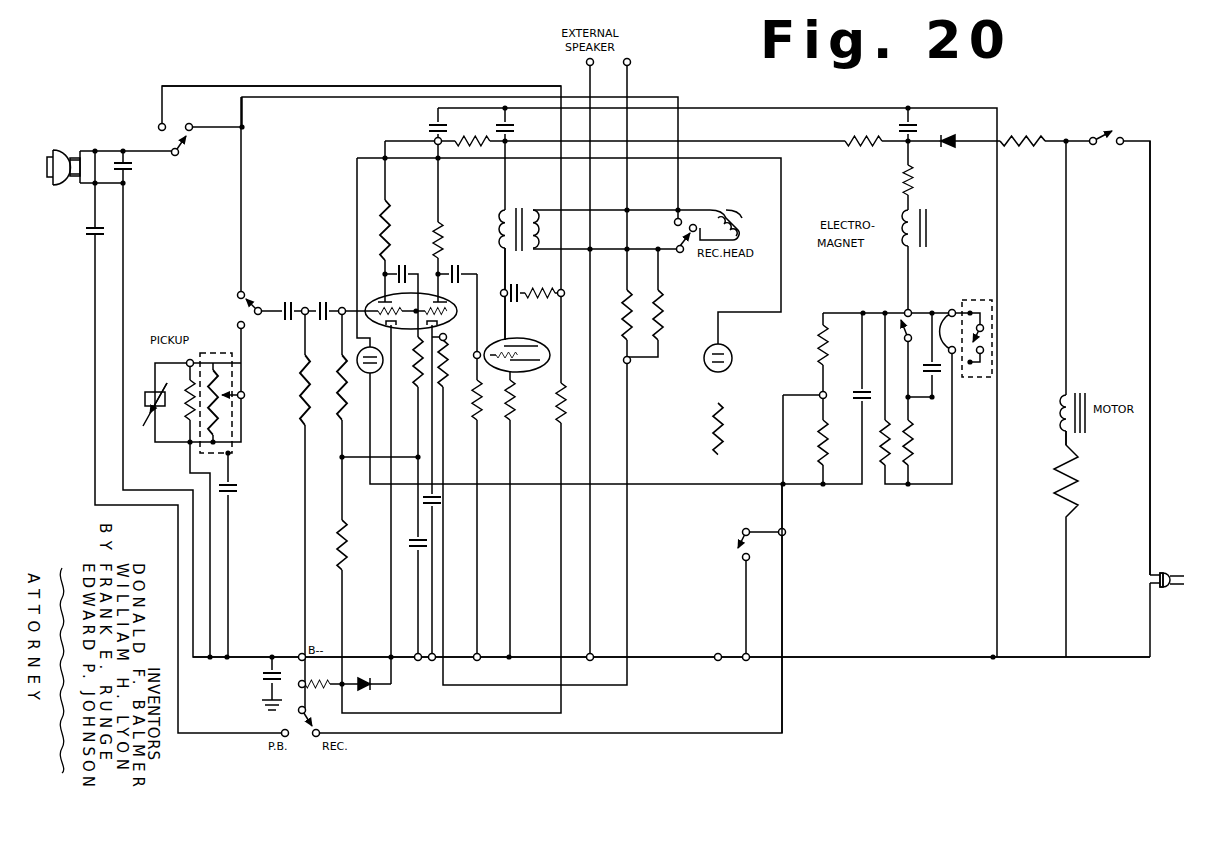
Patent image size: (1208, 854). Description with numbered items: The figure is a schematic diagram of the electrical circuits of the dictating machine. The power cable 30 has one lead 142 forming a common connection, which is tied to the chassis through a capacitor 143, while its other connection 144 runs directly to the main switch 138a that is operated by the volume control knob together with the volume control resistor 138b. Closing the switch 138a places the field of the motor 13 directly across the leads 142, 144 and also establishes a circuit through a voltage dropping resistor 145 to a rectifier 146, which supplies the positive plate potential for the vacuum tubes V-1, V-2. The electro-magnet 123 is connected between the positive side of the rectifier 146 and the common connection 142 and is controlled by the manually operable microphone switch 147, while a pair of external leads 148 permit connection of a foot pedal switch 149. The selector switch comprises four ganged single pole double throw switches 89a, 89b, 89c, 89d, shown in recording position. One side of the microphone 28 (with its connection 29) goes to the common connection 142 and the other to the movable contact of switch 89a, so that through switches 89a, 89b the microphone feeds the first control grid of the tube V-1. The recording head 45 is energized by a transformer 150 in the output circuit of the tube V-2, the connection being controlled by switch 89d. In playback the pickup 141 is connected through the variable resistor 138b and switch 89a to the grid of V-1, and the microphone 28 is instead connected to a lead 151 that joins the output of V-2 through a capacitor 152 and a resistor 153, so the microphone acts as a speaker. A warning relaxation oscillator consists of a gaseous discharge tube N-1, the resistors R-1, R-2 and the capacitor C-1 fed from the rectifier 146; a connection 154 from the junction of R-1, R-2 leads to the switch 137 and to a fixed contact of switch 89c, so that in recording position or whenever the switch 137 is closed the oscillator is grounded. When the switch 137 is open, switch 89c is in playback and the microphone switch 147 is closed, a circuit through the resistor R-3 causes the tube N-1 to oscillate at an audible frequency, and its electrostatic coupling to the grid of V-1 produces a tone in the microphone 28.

The microphone 28 is at (58, 152).
The speaker voice coil connection 29 is at (76, 160).
The selector switch section 89a is at (180, 152).
The selector switch section 89b is at (262, 300).
The selector switch section 89c is at (302, 745).
The selector switch section 89d is at (686, 254).
The lead 151 is at (398, 86).
The pickup 141 is at (143, 380).
The volume control resistor 138b is at (228, 415).
The vacuum tube V-1 is at (366, 292).
The gaseous discharge tube N-1 is at (360, 350).
The transformer 150 is at (524, 206).
The capacitor 152 is at (516, 287).
The resistor 153 is at (545, 302).
The vacuum tube V-2 is at (545, 372).
The recording head 45 is at (752, 232).
The rectifier 146 is at (952, 134).
The voltage dropping resistor 145 is at (1028, 141).
The main switch 138a is at (1123, 132).
The electro-magnet 123 is at (921, 212).
The microphone switch 147 is at (910, 317).
The external leads 148 is at (953, 328).
The foot pedal switch 149 is at (985, 338).
The power cable connection 144 is at (1152, 283).
The motor 13 is at (1074, 394).
The power cable 30 is at (1147, 577).
The resistor R-1 is at (818, 360).
The resistor R-2 is at (822, 445).
The capacitor C-1 is at (858, 400).
The resistor R-3 is at (911, 444).
The switch 137 is at (757, 547).
The connection 154 is at (784, 600).
The common connection lead 142 is at (950, 662).
The capacitor 143 is at (265, 674).